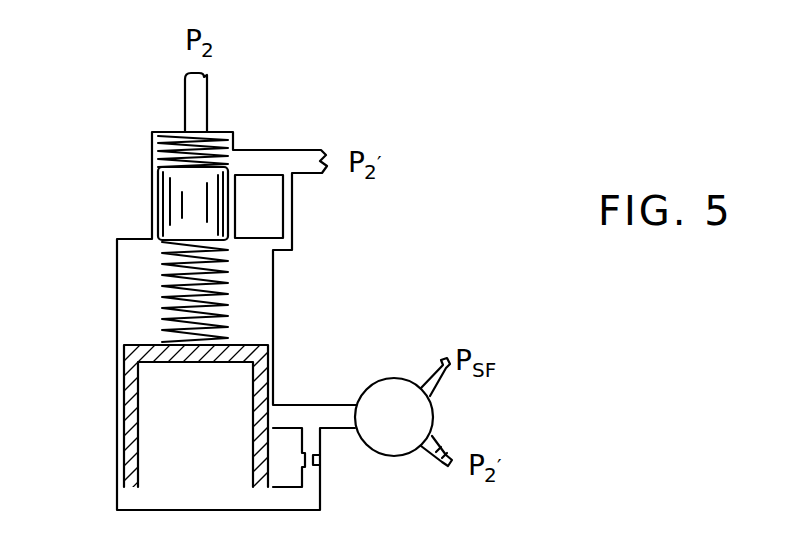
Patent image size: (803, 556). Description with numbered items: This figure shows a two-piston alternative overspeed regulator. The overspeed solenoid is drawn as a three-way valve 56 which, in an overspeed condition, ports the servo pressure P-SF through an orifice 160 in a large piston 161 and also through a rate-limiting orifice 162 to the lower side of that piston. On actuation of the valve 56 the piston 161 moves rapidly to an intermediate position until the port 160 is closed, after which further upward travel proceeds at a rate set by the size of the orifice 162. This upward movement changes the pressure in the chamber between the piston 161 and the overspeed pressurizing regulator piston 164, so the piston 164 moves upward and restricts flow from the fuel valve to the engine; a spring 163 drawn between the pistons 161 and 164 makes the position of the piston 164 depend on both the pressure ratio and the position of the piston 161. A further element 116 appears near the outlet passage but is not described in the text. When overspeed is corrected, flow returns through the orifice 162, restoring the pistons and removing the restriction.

The three-way valve 56 is at (389, 377).
The port block 116 is at (285, 212).
The orifice 160 is at (256, 410).
The large piston 161 is at (133, 404).
The rate-limiting orifice 162 is at (318, 462).
The spring 163 is at (147, 293).
The overspeed pressurizing regulator 164 is at (183, 195).